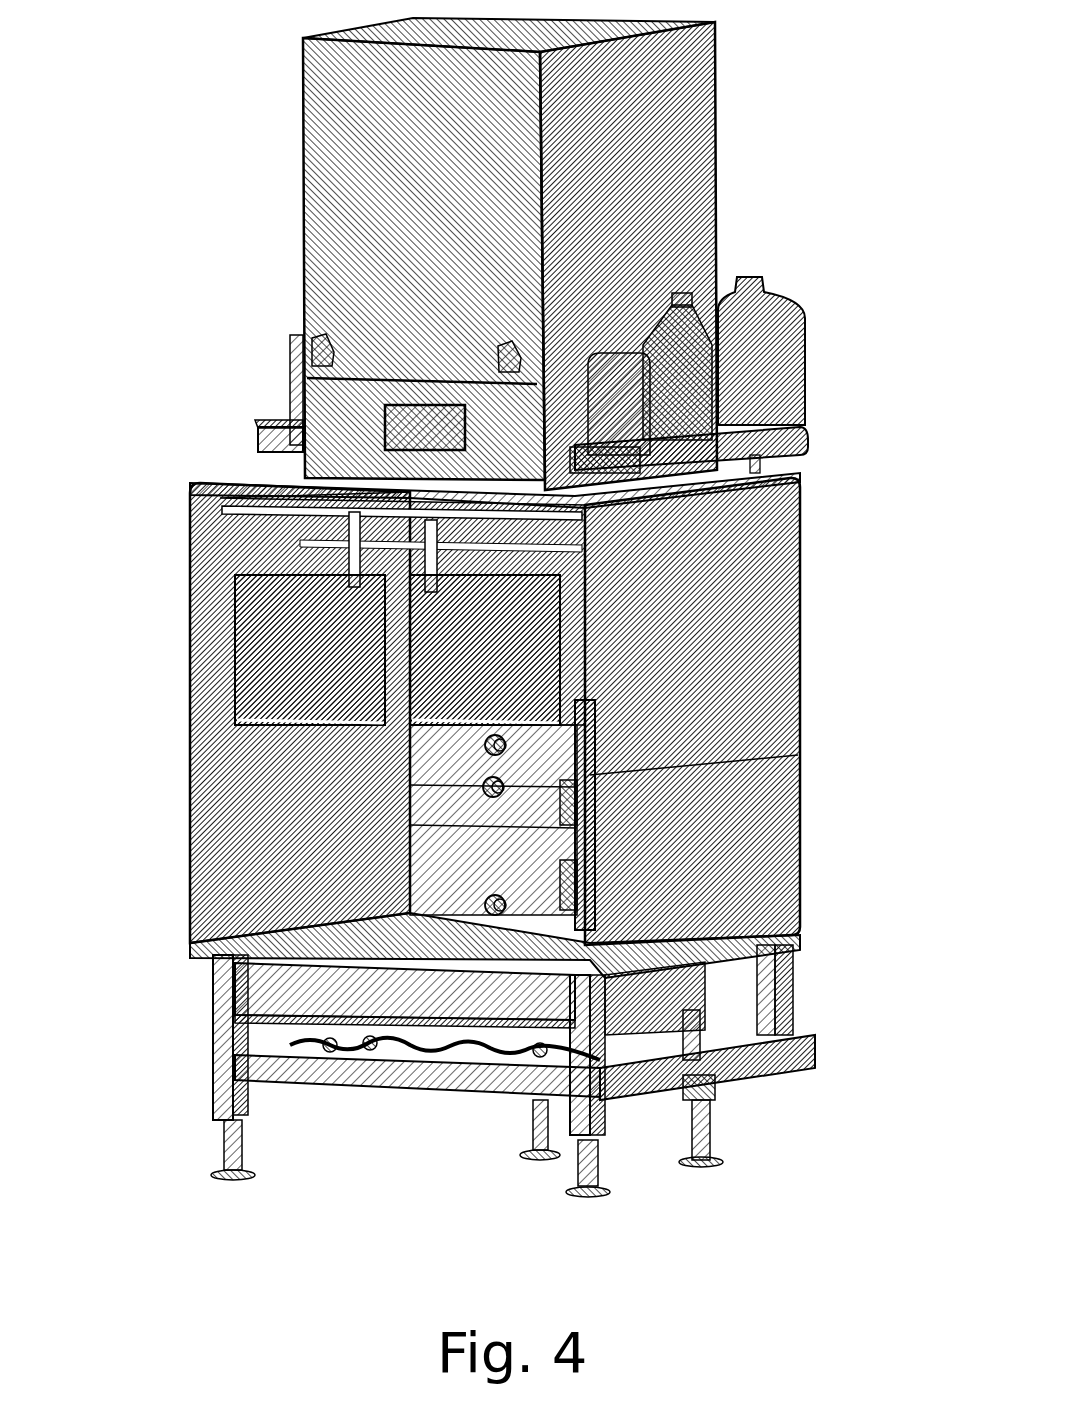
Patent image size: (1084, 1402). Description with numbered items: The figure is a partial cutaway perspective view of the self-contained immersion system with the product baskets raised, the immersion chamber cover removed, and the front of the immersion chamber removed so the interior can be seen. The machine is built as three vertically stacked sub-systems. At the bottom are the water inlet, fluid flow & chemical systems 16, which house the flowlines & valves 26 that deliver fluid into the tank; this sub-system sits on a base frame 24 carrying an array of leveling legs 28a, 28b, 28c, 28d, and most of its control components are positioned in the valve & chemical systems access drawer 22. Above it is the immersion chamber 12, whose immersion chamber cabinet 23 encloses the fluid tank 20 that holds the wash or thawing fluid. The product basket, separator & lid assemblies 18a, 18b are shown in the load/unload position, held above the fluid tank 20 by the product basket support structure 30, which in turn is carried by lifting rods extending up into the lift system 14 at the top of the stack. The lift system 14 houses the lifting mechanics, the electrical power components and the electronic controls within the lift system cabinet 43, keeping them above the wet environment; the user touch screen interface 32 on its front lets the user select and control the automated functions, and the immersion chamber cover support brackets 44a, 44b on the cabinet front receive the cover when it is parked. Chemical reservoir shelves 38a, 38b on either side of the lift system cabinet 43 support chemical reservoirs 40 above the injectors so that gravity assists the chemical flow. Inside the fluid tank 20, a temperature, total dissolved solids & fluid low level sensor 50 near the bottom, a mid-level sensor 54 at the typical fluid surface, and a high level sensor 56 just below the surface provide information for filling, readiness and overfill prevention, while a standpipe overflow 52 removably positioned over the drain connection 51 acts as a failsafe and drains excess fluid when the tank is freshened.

The immersion chamber 12 is at (466, 689).
The lift system 14 is at (480, 254).
The water inlet, fluid flow & chemical systems 16 is at (466, 1080).
The product basket, separator & lid assembly 18a is at (300, 705).
The product basket, separator & lid assembly 18b is at (430, 728).
The fluid tank 20 is at (240, 870).
The valve & chemical systems access drawer 22 is at (333, 995).
The immersion chamber cabinet 23 is at (800, 592).
The base frame 24 is at (790, 998).
The flowlines & valves 26 is at (415, 1050).
The leveling leg 28a is at (215, 1148).
The leveling leg 28b is at (598, 1162).
The leveling leg 28c is at (525, 1128).
The leveling leg 28d is at (712, 1128).
The product basket support structure 30 is at (217, 483).
The user touch screen interface 32 is at (433, 406).
The chemical reservoir shelf 38a is at (262, 440).
The chemical reservoir shelf 38b is at (810, 428).
The chemical reservoir 40 is at (814, 323).
The lift system cabinet 43 is at (717, 108).
The immersion chamber cover support bracket 44a is at (330, 332).
The immersion chamber cover support bracket 44b is at (508, 354).
The temperature, total dissolved solids & fluid low level sensor 50 is at (494, 895).
The drain connection 51 is at (553, 866).
The standpipe overflow 52 is at (572, 815).
The temperature, total dissolved solids & fluid mid-level sensor 54 is at (490, 792).
The temperature, total dissolved solids & fluid high level sensor 56 is at (486, 742).